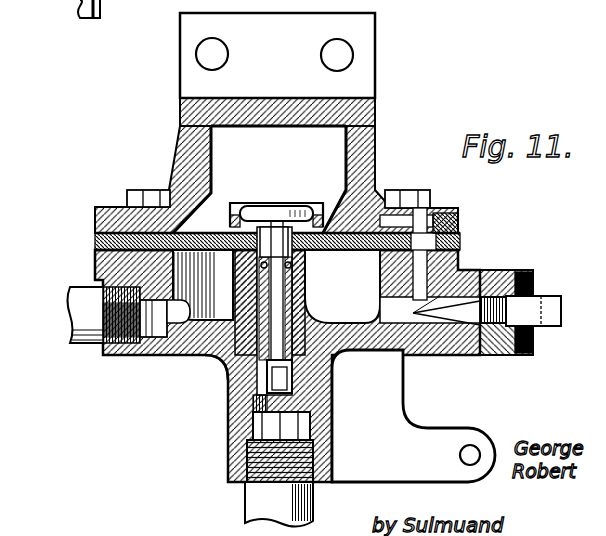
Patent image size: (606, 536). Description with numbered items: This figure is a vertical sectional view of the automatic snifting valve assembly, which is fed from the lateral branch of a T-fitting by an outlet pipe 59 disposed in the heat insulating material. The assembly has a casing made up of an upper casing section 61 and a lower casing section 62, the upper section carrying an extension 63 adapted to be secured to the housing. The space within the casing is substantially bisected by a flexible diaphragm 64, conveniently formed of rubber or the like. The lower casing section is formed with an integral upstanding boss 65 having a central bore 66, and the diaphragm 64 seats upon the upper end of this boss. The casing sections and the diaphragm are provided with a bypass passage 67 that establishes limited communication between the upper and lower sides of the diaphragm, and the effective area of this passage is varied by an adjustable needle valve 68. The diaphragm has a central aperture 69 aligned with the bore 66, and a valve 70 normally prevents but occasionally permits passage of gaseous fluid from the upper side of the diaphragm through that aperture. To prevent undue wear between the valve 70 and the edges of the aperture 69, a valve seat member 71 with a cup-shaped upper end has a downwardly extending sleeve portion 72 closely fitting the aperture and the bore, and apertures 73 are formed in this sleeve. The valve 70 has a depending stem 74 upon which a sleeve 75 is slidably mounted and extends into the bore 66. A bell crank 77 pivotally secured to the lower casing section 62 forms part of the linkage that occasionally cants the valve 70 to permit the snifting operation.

The outlet pipe 59 is at (70, 292).
The upper casing section 61 is at (388, 118).
The lower casing section 62 is at (176, 356).
The extension 63 is at (195, 82).
The flexible diaphragm 64 is at (98, 242).
The upstanding boss 65 is at (237, 269).
The central bore 66 is at (283, 406).
The bypass passage 67 is at (401, 212).
The adjustable needle valve 68 is at (458, 320).
The central aperture 69 is at (155, 180).
The valve 70 is at (252, 212).
The valve seat member 71 is at (322, 200).
The sleeve portion 72 is at (318, 300).
The apertures 73 is at (306, 268).
The depending stem 74 is at (211, 358).
The sleeve 75 is at (295, 351).
The bell crank 77 is at (103, 8).